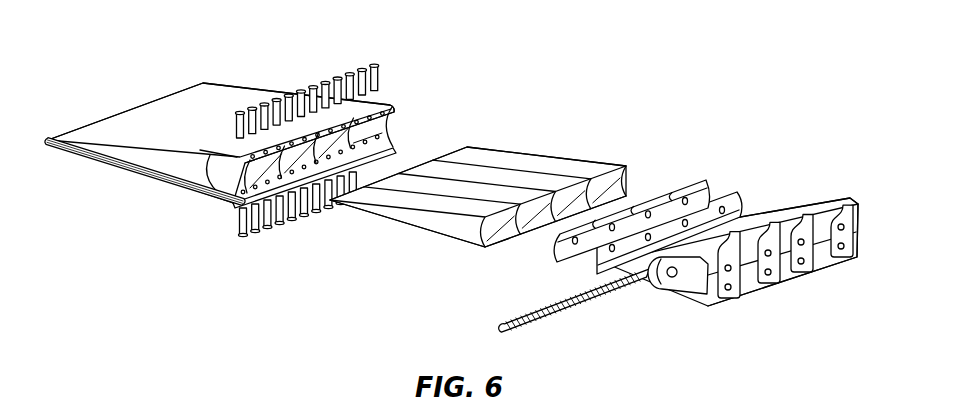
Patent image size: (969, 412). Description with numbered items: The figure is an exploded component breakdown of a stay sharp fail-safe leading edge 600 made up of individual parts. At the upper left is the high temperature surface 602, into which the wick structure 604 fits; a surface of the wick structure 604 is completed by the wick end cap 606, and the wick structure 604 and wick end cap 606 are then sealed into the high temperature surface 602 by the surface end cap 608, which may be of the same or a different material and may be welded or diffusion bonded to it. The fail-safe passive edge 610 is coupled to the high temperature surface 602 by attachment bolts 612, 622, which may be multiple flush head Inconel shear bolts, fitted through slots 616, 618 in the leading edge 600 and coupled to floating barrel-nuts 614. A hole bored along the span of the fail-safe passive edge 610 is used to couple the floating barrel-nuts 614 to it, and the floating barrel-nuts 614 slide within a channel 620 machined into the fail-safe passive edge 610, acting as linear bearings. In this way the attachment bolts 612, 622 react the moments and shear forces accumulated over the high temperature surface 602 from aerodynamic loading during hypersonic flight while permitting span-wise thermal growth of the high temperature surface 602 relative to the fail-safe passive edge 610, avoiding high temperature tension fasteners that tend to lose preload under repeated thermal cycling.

The stay sharp fail-safe leading edge 600 is at (514, 50).
The high temperature surface 602 is at (173, 113).
The wick structure 604 is at (493, 175).
The wick end cap 606 is at (700, 192).
The surface end cap 608 is at (732, 192).
The fail-safe passive edge 610 is at (822, 198).
The attachment bolts 612 is at (357, 69).
The floating barrel-nuts 614 is at (512, 318).
The slots 616 is at (200, 150).
The slots 618 is at (232, 200).
The channel 620 is at (672, 278).
The attachment bolts 622 is at (281, 230).